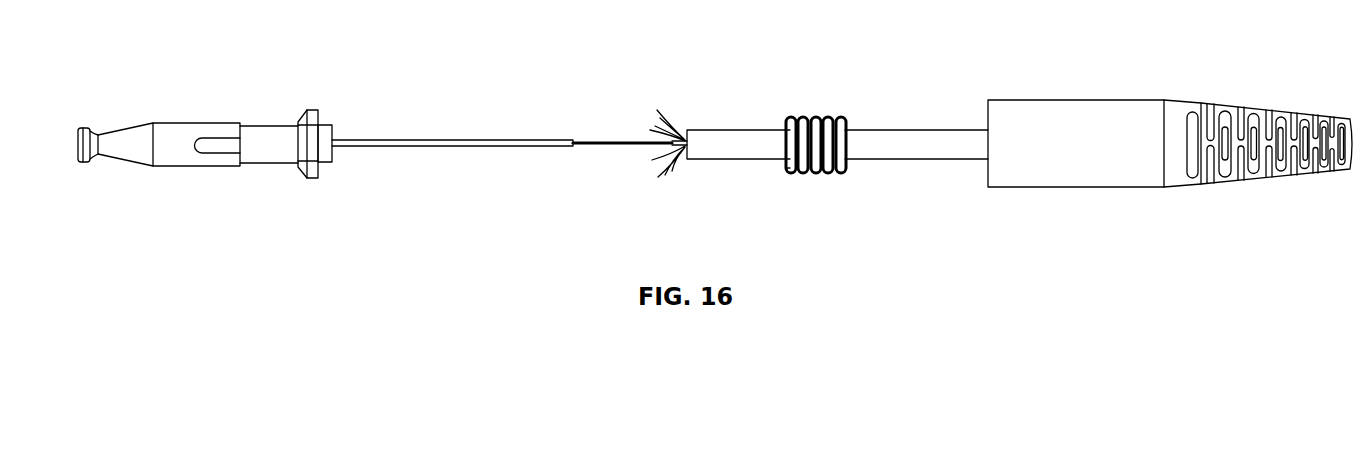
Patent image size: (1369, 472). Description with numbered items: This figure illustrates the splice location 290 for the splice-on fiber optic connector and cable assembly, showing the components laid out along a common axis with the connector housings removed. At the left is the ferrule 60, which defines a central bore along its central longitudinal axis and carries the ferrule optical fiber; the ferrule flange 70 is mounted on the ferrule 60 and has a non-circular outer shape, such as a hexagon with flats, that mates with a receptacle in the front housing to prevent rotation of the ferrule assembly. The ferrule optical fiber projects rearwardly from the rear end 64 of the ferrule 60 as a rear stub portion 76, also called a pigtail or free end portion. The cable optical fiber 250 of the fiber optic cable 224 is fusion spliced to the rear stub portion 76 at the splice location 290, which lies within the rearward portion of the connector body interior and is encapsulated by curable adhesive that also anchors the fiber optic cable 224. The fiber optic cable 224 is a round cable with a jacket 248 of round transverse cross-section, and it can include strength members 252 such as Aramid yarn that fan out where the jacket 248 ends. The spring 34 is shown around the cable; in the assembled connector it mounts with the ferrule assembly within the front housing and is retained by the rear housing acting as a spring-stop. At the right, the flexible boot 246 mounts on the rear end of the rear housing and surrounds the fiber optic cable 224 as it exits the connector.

The ferrule 60 is at (262, 124).
The rear end 64 is at (325, 133).
The ferrule flange 70 is at (312, 180).
The rear stub portion 76 is at (497, 147).
The splice location 290 is at (603, 141).
The cable optical fiber 250 is at (634, 140).
The strength members 252 is at (672, 123).
The jacket 248 is at (730, 153).
The spring 34 is at (838, 123).
The fiber optic cable 224 is at (896, 160).
The flexible boot 246 is at (1120, 100).